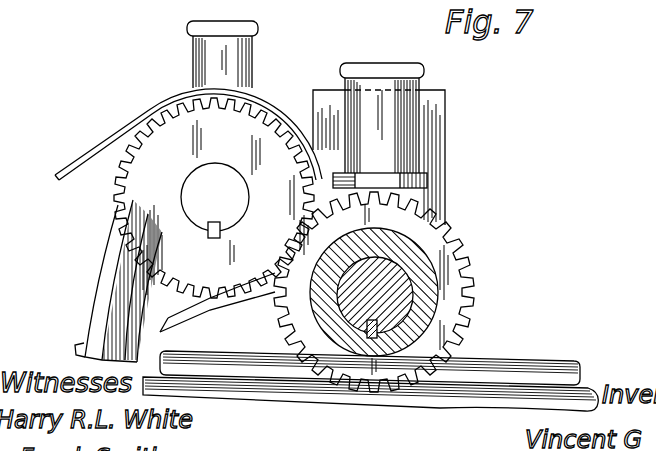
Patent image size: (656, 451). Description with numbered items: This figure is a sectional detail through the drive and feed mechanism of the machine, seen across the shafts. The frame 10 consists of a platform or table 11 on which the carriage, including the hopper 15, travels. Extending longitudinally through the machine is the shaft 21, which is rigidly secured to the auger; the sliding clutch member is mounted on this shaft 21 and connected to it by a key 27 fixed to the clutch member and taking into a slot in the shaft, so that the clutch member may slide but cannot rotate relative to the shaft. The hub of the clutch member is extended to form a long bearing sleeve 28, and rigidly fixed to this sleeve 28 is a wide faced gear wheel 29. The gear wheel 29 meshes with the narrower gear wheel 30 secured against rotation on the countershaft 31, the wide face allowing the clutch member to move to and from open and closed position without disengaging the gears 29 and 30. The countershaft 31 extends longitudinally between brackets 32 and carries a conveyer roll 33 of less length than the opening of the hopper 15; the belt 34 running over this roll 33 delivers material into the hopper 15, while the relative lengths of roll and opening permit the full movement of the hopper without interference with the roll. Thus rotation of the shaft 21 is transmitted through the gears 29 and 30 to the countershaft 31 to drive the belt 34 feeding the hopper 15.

The frame 10 is at (603, 378).
The platform or table 11 is at (498, 400).
The hopper 15 is at (445, 171).
The shaft 21 is at (410, 289).
The key 27 is at (395, 350).
The bearing sleeve 28 is at (437, 316).
The wide faced gear wheel 29 is at (338, 360).
The gear wheel 30 is at (260, 137).
The countershaft 31 is at (232, 198).
The bracket 32 is at (109, 267).
The conveyer roll 33 is at (122, 161).
The belt 34 is at (88, 147).